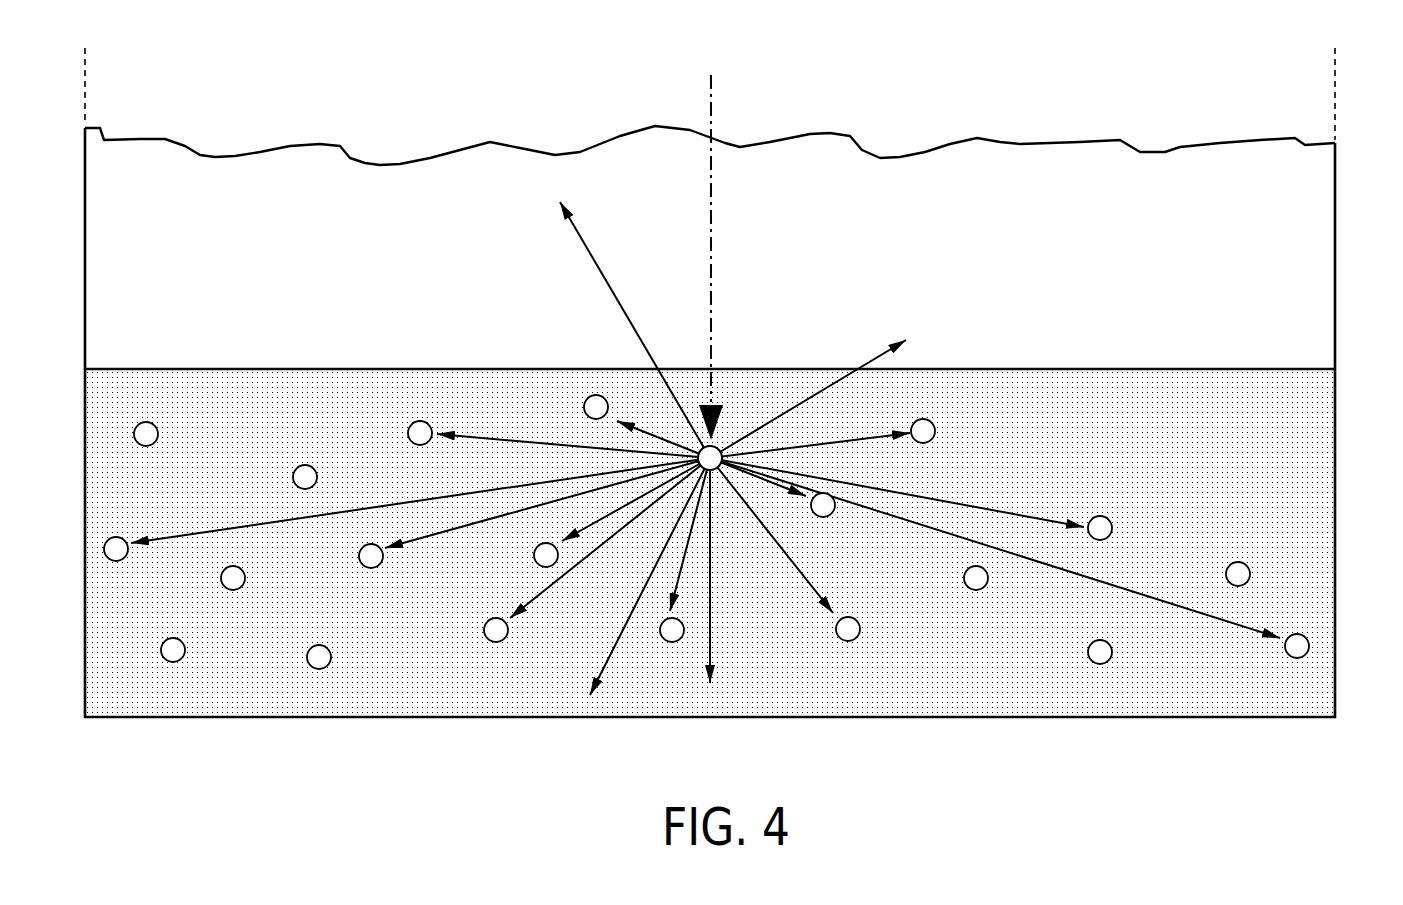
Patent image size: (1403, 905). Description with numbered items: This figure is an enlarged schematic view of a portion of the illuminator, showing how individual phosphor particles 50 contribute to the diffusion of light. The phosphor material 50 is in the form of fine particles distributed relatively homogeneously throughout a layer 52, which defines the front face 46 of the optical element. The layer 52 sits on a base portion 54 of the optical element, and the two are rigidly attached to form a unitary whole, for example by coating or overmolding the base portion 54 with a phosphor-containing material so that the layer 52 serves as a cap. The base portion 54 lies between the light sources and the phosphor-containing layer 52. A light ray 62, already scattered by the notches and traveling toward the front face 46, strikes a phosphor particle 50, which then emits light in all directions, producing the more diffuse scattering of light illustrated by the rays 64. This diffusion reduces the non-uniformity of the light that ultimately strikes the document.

The front face 46 is at (1012, 718).
The phosphor material 50 is at (146, 421).
The layer 52 is at (1342, 377).
The base portion 54 is at (1342, 365).
The light rays 62 is at (712, 208).
The rays 64 is at (687, 558).